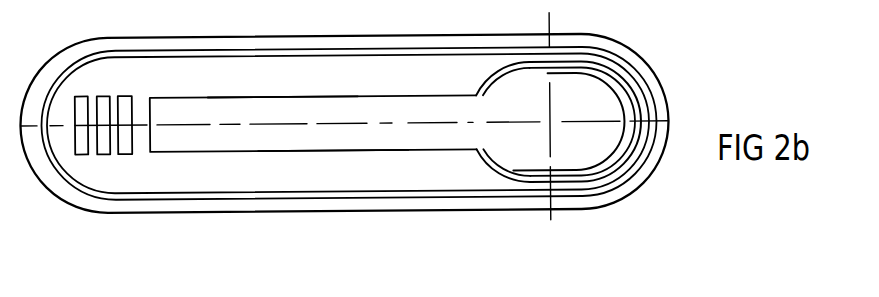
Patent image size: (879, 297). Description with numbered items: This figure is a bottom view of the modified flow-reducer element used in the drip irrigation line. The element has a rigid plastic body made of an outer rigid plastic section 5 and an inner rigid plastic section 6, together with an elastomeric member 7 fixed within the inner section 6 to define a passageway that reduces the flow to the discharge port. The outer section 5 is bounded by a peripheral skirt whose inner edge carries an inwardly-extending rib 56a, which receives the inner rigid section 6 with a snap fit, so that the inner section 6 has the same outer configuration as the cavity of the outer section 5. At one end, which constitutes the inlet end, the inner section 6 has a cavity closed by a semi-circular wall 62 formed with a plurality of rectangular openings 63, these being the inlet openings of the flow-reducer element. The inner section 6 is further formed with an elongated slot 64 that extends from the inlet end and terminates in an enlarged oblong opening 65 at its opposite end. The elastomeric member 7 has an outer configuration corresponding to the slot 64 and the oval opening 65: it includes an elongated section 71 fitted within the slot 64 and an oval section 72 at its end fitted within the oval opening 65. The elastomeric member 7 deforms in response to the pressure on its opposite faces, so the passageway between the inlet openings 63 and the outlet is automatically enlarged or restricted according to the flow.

The outer rigid plastic section 5 is at (133, 40).
The inner rigid plastic section 6 is at (197, 77).
The inwardly-extending rib 56a is at (371, 56).
The semi-circular wall 62 is at (65, 147).
The rectangular openings 63 is at (105, 148).
The elongated slot 64 is at (261, 103).
The elastomeric member 7 is at (422, 110).
The elongated section 71 is at (341, 140).
The enlarged oblong opening 65 is at (571, 79).
The oval section 72 is at (575, 158).